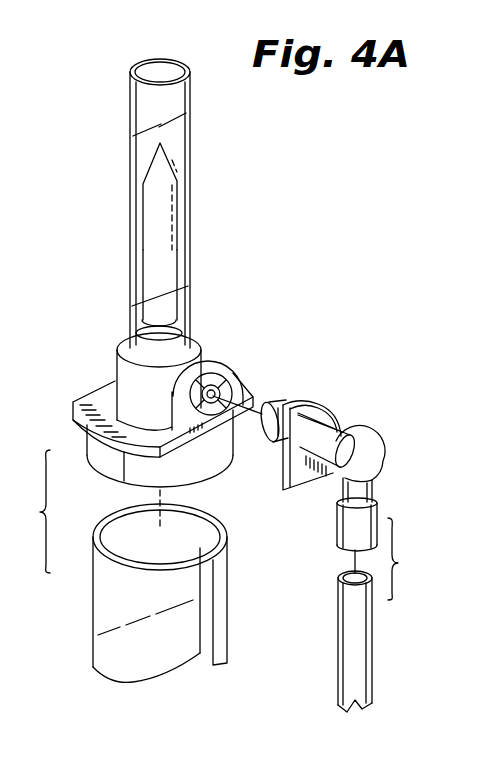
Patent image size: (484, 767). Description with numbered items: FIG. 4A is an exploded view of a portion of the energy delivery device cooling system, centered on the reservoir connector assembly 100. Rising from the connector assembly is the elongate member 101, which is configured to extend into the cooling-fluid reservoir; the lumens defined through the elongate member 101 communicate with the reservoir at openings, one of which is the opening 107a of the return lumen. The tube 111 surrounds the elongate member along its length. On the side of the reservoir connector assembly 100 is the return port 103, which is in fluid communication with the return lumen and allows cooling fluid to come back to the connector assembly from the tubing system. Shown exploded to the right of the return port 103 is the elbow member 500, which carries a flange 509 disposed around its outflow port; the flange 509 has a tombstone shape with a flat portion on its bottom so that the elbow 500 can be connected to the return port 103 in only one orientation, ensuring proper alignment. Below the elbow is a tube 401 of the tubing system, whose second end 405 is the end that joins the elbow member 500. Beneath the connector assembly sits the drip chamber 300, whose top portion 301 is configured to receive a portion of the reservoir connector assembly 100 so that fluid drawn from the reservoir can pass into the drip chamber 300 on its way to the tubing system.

The outer tube 111 is at (137, 70).
The opening 107a is at (152, 170).
The elongate member 101 is at (143, 230).
The reservoir connector assembly 100 is at (75, 387).
The return port 103 is at (228, 358).
The elbow member 500 is at (390, 441).
The flange 509 is at (332, 404).
The second end 405 is at (340, 585).
The tube 401 is at (340, 663).
The top portion 301 is at (106, 520).
The drip chamber 300 is at (93, 603).